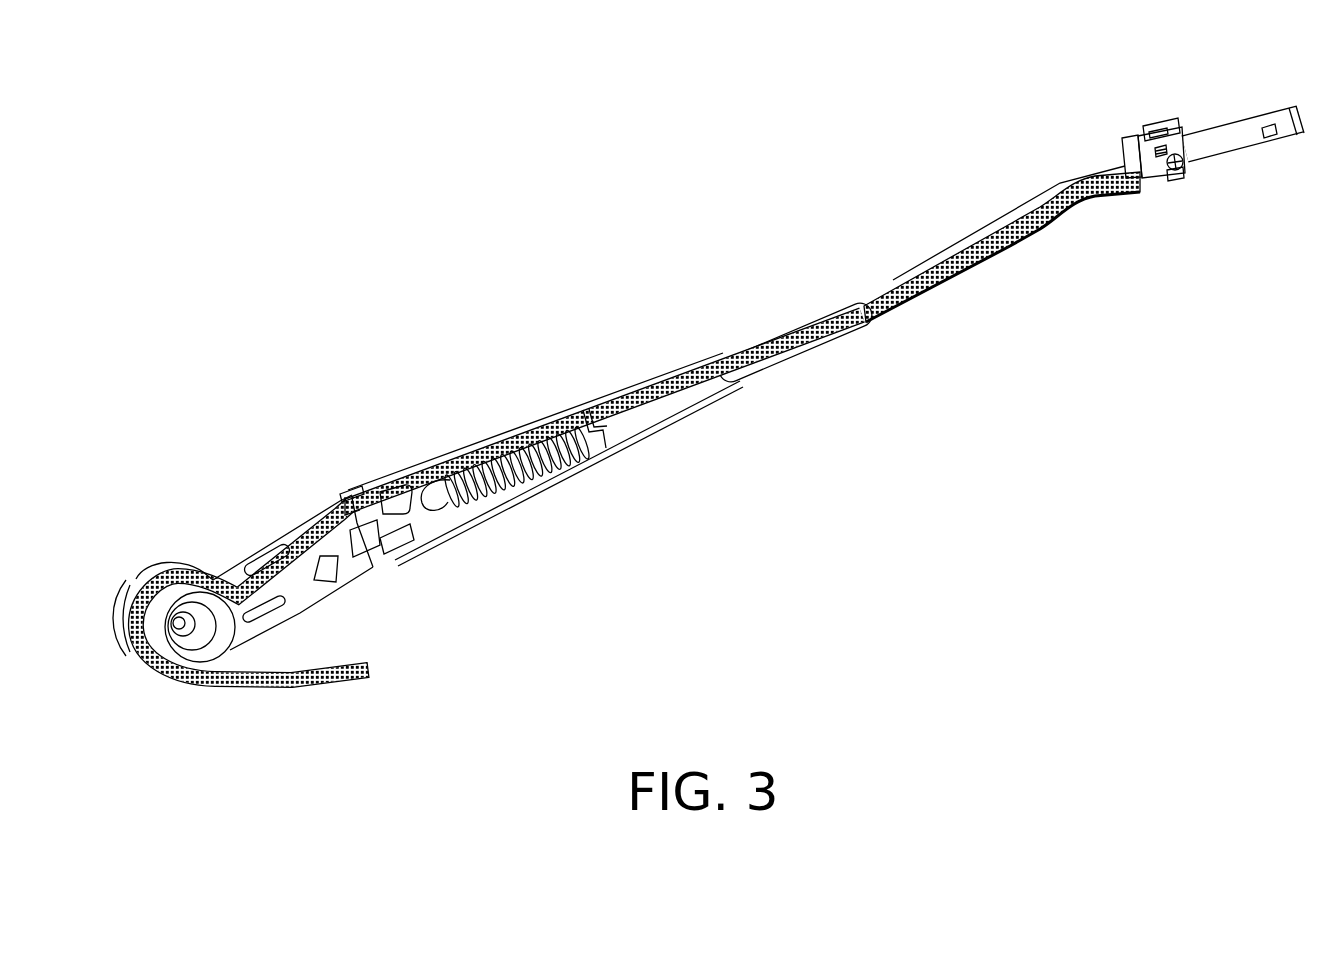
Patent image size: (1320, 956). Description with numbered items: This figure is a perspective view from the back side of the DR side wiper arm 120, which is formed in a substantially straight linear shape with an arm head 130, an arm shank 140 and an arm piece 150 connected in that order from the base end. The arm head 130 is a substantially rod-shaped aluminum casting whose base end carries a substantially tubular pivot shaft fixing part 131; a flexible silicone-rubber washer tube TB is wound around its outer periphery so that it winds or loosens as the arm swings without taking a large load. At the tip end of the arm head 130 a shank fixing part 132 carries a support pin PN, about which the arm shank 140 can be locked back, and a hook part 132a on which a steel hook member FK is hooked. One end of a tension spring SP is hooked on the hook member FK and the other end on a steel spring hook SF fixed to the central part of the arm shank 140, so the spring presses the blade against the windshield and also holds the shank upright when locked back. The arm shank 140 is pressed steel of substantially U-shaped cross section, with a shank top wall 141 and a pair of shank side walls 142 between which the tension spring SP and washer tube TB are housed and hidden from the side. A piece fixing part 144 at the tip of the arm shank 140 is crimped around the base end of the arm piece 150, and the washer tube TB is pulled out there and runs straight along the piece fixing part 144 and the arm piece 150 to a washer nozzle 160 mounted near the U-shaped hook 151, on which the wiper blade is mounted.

The DR side wiper arm 120 is at (832, 387).
The arm head 130 is at (302, 594).
The pivot shaft fixing part 131 is at (155, 617).
The shank fixing part 132 is at (390, 502).
The hook part 132a is at (390, 532).
The arm shank 140 is at (569, 453).
The shank top wall 141 is at (440, 480).
The shank side walls 142 is at (500, 427).
The piece fixing part 144 is at (795, 335).
The arm piece 150 is at (1222, 145).
The U-shaped hook 151 is at (1283, 110).
The washer nozzle 160 is at (1155, 182).
The washer tube TB is at (1010, 222).
The support pin PN is at (366, 486).
The tension spring SP is at (523, 483).
The spring hook SF is at (617, 453).
The hook member FK is at (408, 538).